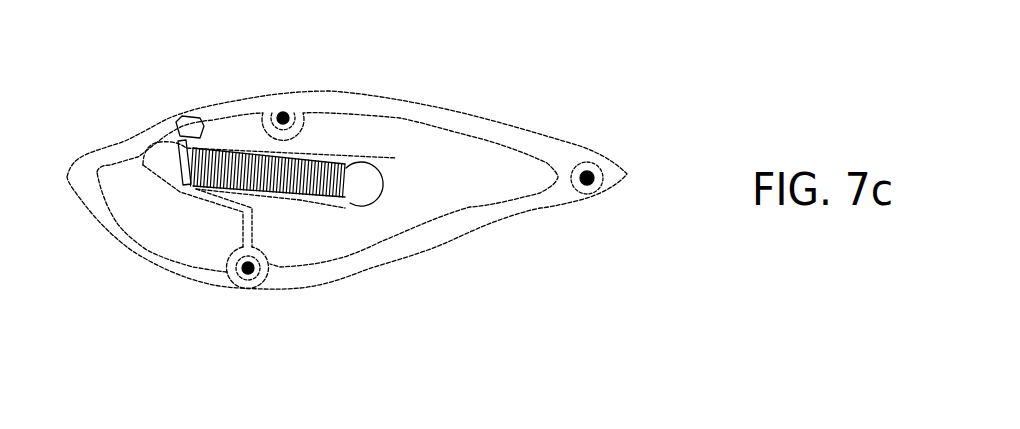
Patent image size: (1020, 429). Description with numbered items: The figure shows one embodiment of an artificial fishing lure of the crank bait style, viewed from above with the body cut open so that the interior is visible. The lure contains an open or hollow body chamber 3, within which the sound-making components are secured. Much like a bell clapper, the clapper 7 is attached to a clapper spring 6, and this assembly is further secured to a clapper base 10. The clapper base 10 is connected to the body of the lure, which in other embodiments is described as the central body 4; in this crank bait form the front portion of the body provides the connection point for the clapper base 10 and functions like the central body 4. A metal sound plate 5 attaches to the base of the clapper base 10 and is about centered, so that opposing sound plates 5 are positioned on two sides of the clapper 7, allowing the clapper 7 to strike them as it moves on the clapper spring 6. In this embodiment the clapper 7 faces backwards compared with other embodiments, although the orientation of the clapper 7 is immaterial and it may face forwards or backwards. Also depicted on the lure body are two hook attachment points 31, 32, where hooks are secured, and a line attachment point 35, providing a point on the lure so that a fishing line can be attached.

The hollow body chamber 3 is at (433, 187).
The central body 4 is at (193, 122).
The metal sound plate 5 is at (305, 198).
The clapper spring 6 is at (237, 172).
The clapper 7 is at (370, 190).
The clapper base 10 is at (188, 162).
The hook attachment point 31 is at (247, 278).
The hook attachment point 32 is at (590, 182).
The line attachment point 35 is at (285, 110).